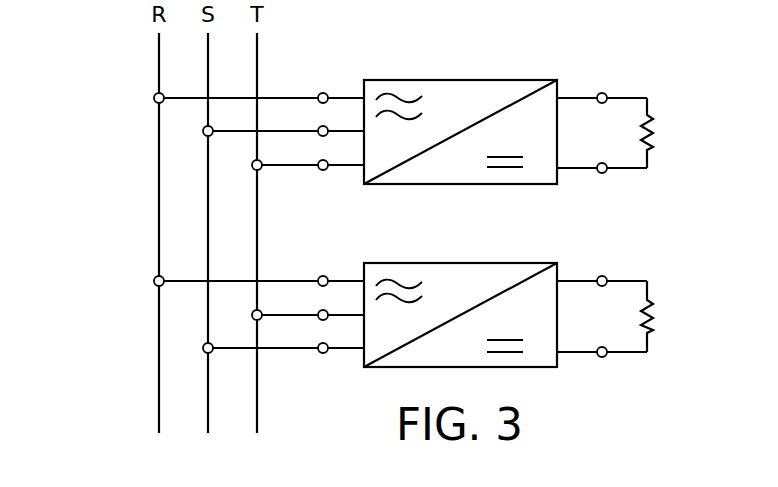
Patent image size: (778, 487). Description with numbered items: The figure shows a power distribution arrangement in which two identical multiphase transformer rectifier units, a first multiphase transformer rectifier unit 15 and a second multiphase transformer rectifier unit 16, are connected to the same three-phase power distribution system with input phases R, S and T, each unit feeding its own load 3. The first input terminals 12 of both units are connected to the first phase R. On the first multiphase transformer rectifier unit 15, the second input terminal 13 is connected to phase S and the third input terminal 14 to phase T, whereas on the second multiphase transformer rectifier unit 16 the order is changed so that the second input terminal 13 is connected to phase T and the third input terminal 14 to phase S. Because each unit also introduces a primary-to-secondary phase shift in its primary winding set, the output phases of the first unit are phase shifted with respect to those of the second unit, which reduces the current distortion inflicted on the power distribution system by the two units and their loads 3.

The first input terminal 12 is at (321, 93).
The second input terminal 13 is at (327, 129).
The third input terminal 14 is at (326, 171).
The first multiphase transformer rectifier unit 15 is at (475, 80).
The second multiphase transformer rectifier unit 16 is at (475, 264).
The load 3 is at (655, 132).